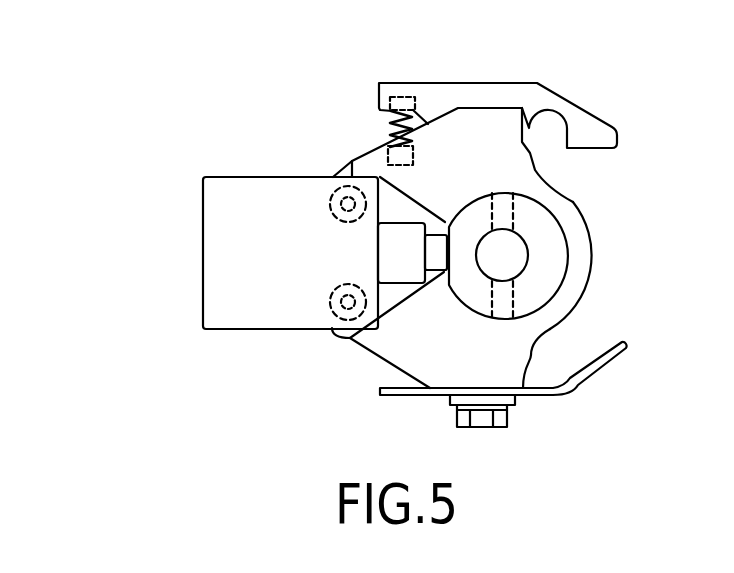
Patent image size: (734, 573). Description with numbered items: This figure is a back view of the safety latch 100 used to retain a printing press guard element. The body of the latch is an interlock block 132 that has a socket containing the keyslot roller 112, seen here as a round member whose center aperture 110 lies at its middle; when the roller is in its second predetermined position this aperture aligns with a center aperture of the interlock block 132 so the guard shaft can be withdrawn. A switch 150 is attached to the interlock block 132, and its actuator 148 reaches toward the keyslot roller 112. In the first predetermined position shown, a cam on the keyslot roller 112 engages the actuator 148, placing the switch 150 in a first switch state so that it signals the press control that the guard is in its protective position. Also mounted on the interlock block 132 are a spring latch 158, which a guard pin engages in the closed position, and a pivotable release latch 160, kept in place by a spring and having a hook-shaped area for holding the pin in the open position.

The safety latch 100 is at (352, 160).
The center aperture 110 is at (506, 248).
The keyslot roller 112 is at (553, 213).
The interlock block 132 is at (392, 368).
The actuator 148 is at (452, 276).
The switch 150 is at (203, 190).
The spring latch 158 is at (530, 384).
The release latch 160 is at (543, 88).